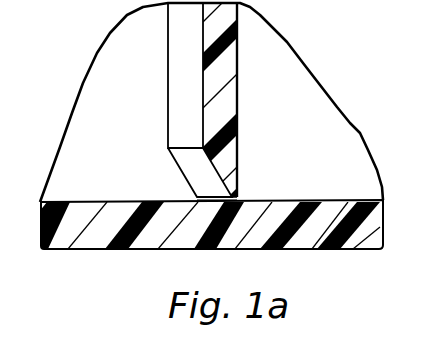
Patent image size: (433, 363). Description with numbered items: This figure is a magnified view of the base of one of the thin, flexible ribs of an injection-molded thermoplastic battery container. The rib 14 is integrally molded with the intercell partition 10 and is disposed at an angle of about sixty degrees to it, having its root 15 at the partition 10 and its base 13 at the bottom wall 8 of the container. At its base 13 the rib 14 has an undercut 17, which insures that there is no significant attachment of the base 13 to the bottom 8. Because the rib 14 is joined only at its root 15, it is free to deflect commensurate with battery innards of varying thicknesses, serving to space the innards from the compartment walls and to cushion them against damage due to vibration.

The intercell partition 10 is at (117, 50).
The bottom wall 8 is at (75, 227).
The root 15 is at (167, 97).
The rib 14 is at (228, 60).
The undercut 17 is at (190, 168).
The base 13 is at (234, 201).